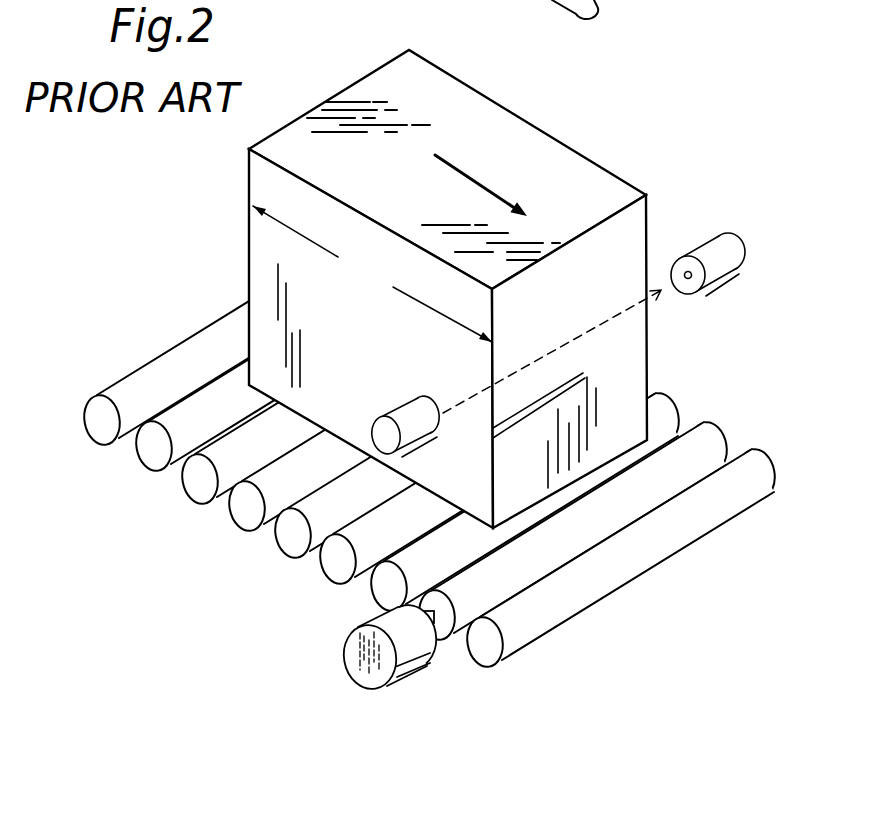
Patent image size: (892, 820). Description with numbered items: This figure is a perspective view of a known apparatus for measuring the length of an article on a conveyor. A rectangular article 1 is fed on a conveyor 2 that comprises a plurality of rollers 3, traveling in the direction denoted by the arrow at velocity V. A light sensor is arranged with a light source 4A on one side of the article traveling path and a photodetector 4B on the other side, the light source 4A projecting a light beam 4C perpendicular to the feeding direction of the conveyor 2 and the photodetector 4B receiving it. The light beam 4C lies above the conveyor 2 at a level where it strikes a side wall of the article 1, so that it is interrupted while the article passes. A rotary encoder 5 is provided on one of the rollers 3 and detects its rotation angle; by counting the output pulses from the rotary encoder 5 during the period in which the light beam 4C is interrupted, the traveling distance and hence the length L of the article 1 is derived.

The rectangular article 1 is at (575, 166).
The conveyor 2 is at (667, 547).
The rollers 3 is at (317, 513).
The light source 4A is at (410, 417).
The photodetector 4B is at (723, 245).
The light beam 4C is at (577, 337).
The rotary encoder 5 is at (410, 673).